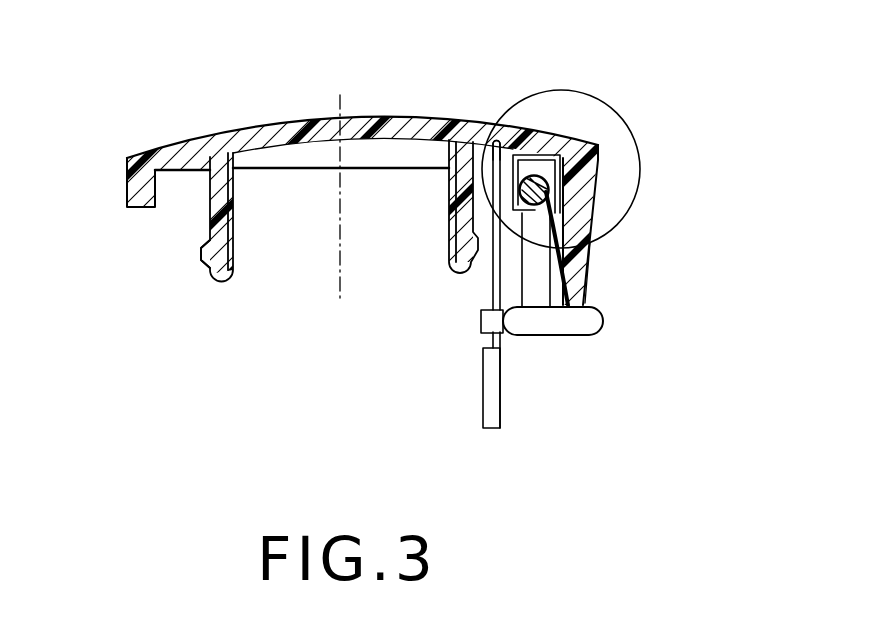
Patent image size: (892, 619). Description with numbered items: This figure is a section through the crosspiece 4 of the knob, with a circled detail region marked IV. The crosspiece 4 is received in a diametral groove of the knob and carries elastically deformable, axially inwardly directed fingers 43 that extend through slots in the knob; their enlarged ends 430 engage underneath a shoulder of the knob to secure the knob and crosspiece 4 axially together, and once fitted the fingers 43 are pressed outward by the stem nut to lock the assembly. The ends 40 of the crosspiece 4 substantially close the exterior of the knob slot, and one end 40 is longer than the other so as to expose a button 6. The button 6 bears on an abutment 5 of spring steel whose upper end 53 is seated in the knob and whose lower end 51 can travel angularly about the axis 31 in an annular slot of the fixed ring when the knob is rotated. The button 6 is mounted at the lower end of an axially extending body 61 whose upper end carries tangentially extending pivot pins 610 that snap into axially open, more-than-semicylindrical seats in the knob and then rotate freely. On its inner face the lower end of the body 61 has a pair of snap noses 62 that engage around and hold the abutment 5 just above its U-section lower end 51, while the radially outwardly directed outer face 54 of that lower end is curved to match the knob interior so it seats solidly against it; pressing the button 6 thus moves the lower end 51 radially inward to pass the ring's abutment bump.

The crosspiece 4 is at (376, 118).
The ends of the crosspiece 40 is at (127, 192).
The fingers 43 is at (214, 205).
The enlarged ends 430 is at (205, 250).
The axis 31 is at (340, 262).
The abutment 5 is at (500, 340).
The upper end 53 is at (492, 150).
The lower end 51 is at (485, 405).
The snap noses 62 is at (483, 320).
The body 61 is at (530, 272).
The pivot pins 610 is at (560, 195).
The outer face 54 is at (562, 290).
The button 6 is at (585, 323).
The detail view circle IV is at (613, 107).